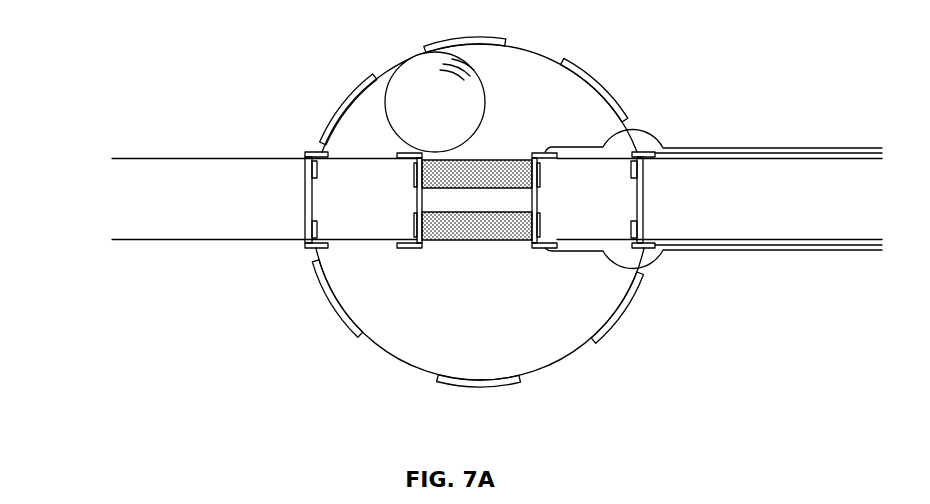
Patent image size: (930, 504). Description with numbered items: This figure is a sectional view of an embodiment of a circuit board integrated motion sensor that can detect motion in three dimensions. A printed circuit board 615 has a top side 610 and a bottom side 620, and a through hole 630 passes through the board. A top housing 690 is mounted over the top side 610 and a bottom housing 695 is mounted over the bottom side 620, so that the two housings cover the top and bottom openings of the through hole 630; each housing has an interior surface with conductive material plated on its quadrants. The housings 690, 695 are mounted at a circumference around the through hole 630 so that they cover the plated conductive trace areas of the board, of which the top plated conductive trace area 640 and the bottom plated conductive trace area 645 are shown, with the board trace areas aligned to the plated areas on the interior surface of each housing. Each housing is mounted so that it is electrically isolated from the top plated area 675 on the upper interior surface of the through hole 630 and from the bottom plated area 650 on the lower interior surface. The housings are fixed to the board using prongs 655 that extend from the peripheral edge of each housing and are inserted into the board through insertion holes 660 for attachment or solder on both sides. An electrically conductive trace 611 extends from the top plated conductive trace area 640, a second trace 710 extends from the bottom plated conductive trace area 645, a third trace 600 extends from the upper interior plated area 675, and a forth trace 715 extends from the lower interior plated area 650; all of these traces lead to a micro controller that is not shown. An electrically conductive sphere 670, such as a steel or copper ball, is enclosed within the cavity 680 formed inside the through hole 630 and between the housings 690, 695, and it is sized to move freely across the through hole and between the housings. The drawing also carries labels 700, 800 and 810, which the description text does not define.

The third trace 600 is at (820, 148).
The top side 610 is at (182, 158).
The electrically conductive trace 611 is at (752, 148).
The printed circuit board 615 is at (123, 207).
The bottom side 620 is at (182, 240).
The through hole 630 is at (472, 233).
The top plated conductive trace area 640 is at (308, 152).
The bottom plated conductive trace area 645 is at (308, 248).
The bottom plated area 650 is at (410, 248).
The prong 655 is at (316, 165).
The insertion hole 660 is at (305, 200).
The electrically conductive sphere 670 is at (392, 70).
The top plated area 675 is at (408, 152).
The cavity 680 is at (383, 353).
The top housing 690 is at (518, 44).
The bottom housing 695 is at (567, 360).
The lens 700 is at (397, 152).
The second trace 710 is at (757, 250).
The forth trace 715 is at (820, 250).
The upper plates 800 is at (453, 36).
The lower plates 810 is at (330, 308).